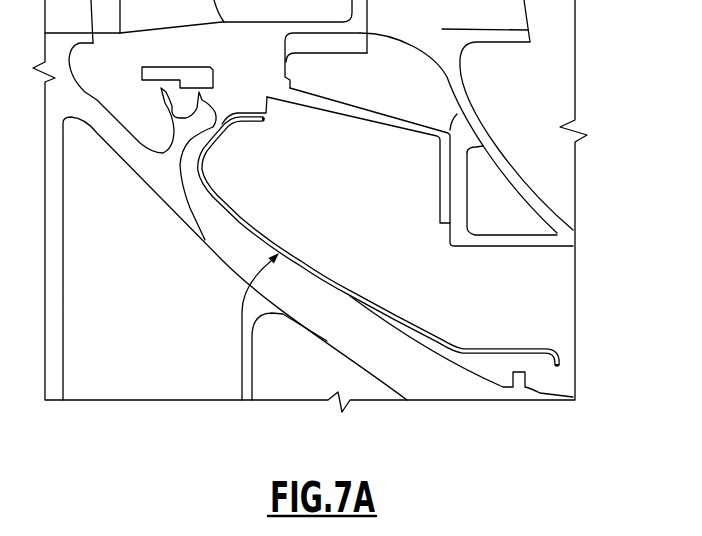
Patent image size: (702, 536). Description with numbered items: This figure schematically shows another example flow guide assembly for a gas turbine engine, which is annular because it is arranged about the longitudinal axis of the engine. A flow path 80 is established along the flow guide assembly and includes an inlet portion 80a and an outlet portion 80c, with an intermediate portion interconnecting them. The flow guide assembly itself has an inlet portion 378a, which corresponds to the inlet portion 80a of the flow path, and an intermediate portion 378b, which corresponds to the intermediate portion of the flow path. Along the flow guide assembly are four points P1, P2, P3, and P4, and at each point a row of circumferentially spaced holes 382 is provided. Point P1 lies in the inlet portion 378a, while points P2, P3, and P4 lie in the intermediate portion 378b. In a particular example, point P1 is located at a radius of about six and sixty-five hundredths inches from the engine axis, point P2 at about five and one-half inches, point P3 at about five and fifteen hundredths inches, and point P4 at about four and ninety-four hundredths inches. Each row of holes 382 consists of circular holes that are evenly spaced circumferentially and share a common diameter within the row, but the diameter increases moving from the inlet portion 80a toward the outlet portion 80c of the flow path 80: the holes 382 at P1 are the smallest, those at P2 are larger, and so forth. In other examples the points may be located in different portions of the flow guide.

The flow path 80 is at (250, 234).
The inlet portion 80a is at (258, 124).
The outlet portion 80c is at (536, 325).
The holes 382 is at (236, 140).
The inlet portion 378a is at (232, 166).
The intermediate portion 378b is at (242, 307).
The point P1 is at (226, 130).
The point P2 is at (307, 263).
The point P3 is at (387, 312).
The point P4 is at (440, 343).